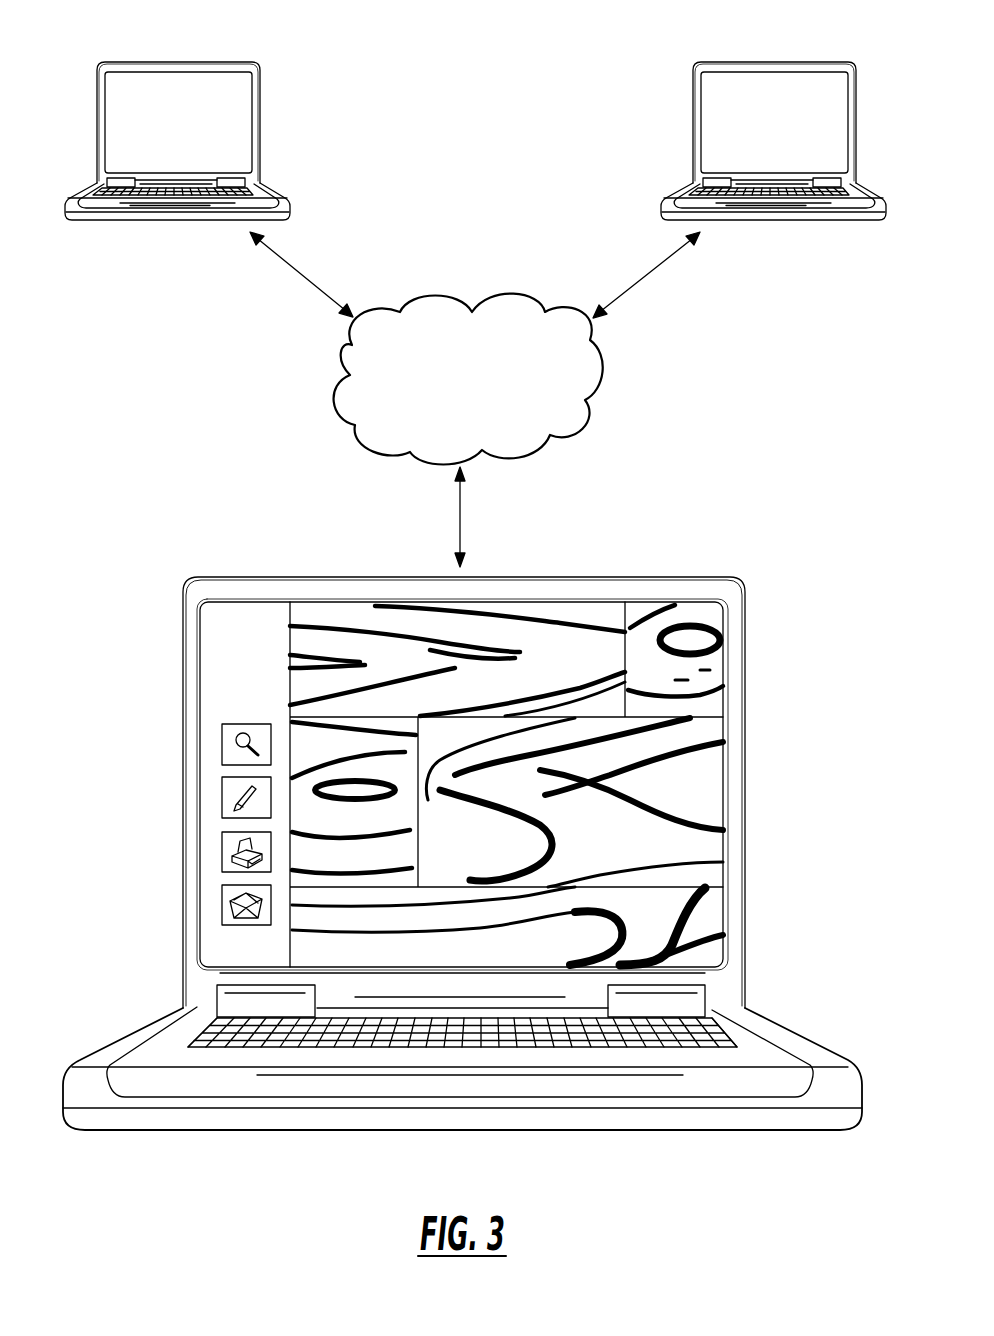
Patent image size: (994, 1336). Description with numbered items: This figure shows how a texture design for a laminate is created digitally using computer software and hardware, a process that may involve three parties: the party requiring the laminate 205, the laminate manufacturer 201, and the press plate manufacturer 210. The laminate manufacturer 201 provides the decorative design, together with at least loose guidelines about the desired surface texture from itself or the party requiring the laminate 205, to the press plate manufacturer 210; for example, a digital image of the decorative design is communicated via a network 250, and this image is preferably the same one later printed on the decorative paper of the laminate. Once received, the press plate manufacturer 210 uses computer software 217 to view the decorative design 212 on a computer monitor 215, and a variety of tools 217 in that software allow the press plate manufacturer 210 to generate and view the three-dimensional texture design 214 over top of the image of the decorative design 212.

The laminate manufacturer 201 is at (853, 88).
The party requiring the laminate 205 is at (257, 88).
The network 250 is at (478, 400).
The press plate manufacturer 210 is at (462, 836).
The computer software tools 217 is at (237, 657).
The texture design 214 is at (677, 748).
The decorative design 212 is at (693, 890).
The computer monitor 215 is at (725, 983).